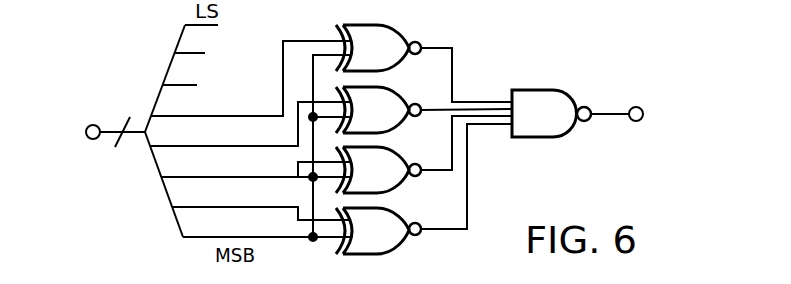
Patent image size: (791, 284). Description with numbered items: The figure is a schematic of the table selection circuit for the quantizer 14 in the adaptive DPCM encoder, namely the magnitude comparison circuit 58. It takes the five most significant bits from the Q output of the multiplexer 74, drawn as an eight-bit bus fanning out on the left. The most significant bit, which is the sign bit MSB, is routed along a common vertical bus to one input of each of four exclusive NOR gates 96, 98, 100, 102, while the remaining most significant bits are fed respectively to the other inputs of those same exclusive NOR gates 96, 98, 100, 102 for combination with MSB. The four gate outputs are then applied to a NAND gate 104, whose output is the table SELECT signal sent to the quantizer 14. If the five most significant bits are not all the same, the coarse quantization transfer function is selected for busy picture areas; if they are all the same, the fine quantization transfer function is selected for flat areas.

The magnitude comparison circuit 58 is at (554, 81).
The exclusive NOR gate 96 is at (387, 207).
The exclusive NOR gate 98 is at (387, 146).
The exclusive NOR gate 100 is at (385, 87).
The exclusive NOR gate 102 is at (385, 26).
The NAND gate 104 is at (572, 90).
The multiplexer 74 is at (91, 150).
The quantizer 14 is at (669, 155).